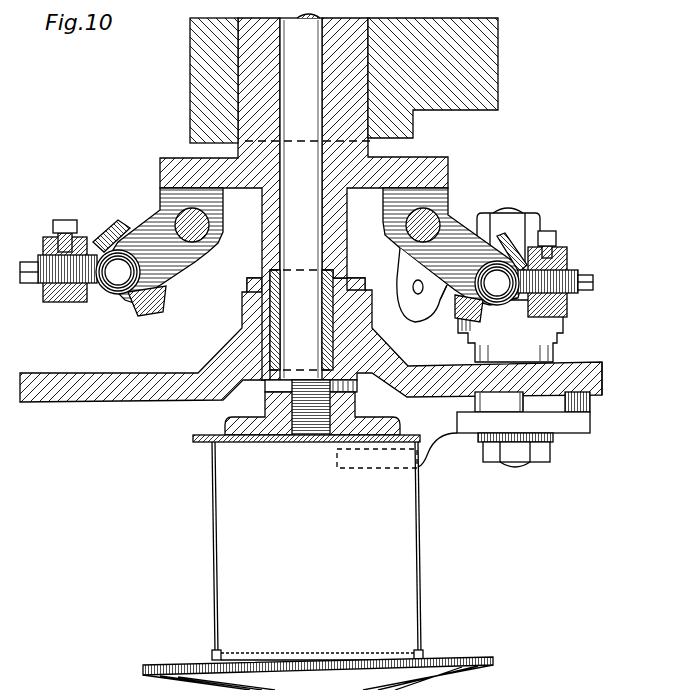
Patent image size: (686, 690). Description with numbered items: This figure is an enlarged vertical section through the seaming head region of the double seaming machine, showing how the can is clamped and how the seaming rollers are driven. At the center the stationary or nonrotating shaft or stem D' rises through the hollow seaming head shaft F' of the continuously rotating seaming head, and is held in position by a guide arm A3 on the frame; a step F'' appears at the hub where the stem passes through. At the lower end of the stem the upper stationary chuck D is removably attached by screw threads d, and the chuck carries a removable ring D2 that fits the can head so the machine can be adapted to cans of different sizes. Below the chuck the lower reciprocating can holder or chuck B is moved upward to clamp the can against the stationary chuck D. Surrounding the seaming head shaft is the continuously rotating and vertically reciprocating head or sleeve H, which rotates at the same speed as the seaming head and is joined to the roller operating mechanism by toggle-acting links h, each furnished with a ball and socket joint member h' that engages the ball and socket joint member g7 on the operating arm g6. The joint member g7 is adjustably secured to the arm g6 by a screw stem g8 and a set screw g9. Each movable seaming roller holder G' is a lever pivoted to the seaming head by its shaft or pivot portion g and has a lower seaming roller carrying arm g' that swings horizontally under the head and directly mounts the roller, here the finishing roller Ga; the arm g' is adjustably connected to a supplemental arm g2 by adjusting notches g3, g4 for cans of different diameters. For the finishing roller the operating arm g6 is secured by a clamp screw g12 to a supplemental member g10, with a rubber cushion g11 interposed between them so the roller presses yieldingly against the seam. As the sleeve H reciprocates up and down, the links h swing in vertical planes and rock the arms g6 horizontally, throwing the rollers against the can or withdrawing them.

The guide arm A3 is at (497, 93).
The rotating and reciprocating head or sleeve H is at (448, 175).
The toggle-acting link h is at (316, 242).
The ball and socket joint member h' is at (310, 261).
The shaft or pivot portion g is at (508, 218).
The set screw g9 is at (70, 219).
The operating arm g6 is at (589, 243).
The ball and socket joint member g7 is at (110, 294).
The screw stem g8 is at (592, 298).
The supplemental member g10 is at (398, 268).
The rubber cushion g11 is at (455, 318).
The clamp screw g12 is at (416, 304).
The hub step F'' is at (295, 267).
The stationary shaft or stem D' is at (308, 197).
The seaming head shaft F' is at (311, 340).
The upper stationary chuck D is at (306, 407).
The removable ring D2 is at (241, 444).
The screw threads d is at (311, 437).
The finishing roller Ga is at (338, 469).
The movable seaming roller holder G' is at (520, 419).
The seaming roller carrying arm g' is at (490, 391).
The supplemental arm g2 is at (603, 395).
The adjusting notch g3 is at (578, 430).
The adjusting notch g4 is at (570, 410).
The lower reciprocating can holder or chuck B is at (462, 656).